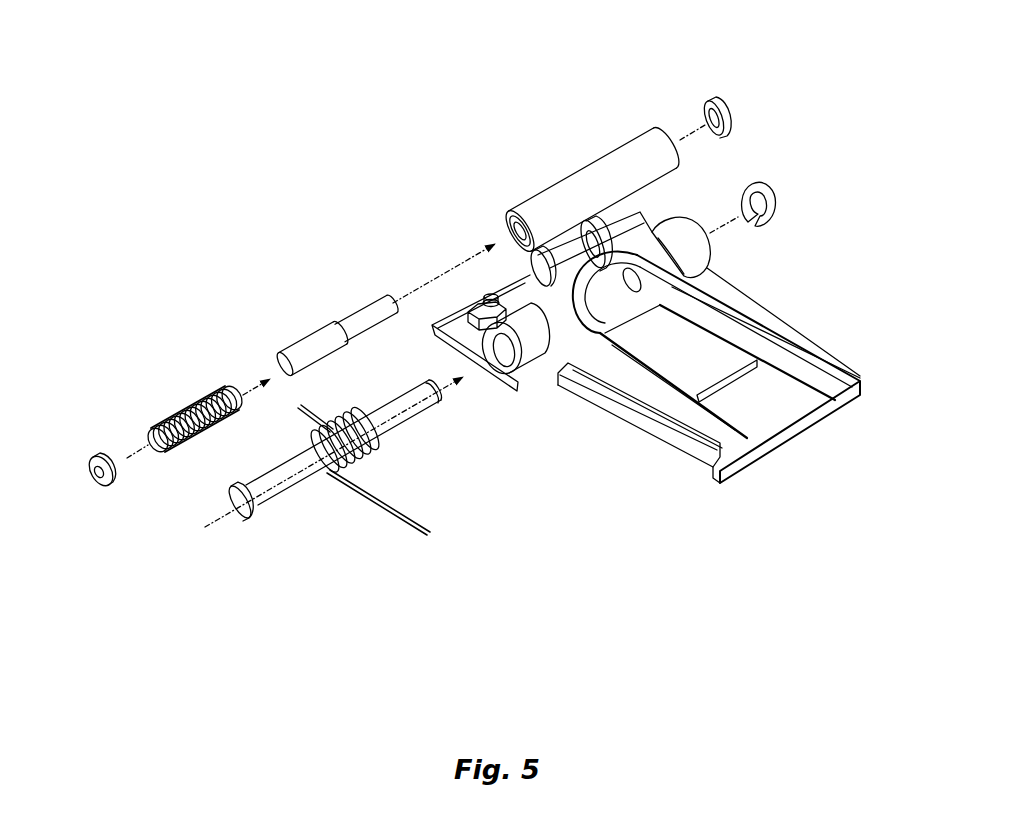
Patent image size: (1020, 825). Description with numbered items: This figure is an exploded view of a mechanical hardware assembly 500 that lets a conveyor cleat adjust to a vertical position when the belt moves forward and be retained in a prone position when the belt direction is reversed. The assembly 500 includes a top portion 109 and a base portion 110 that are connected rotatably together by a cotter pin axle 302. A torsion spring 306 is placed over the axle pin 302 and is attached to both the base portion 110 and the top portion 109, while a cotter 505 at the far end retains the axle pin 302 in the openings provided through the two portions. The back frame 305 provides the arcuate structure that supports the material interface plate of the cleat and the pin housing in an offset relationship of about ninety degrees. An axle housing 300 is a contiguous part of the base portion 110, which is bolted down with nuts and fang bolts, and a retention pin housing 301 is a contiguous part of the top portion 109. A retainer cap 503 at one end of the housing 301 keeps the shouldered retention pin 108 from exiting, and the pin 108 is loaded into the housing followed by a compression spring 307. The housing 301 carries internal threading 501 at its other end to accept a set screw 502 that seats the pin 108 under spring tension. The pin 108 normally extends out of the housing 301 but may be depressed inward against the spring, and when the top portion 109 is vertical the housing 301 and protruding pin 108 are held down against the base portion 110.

The mechanical hardware assembly 500 is at (297, 139).
The top portion 109 is at (787, 333).
The back frame 305 is at (735, 298).
The cotter 505 is at (770, 185).
The retainer cap 503 is at (703, 102).
The retention pin housing 301 is at (570, 178).
The internal threading 501 is at (510, 210).
The axle housing 300 is at (543, 347).
The base portion 110 is at (463, 290).
The retention pin 108 is at (357, 313).
The compression spring 307 is at (198, 405).
The set screw 502 is at (102, 458).
The cotter pin axle 302 is at (233, 523).
The torsion spring 306 is at (363, 458).